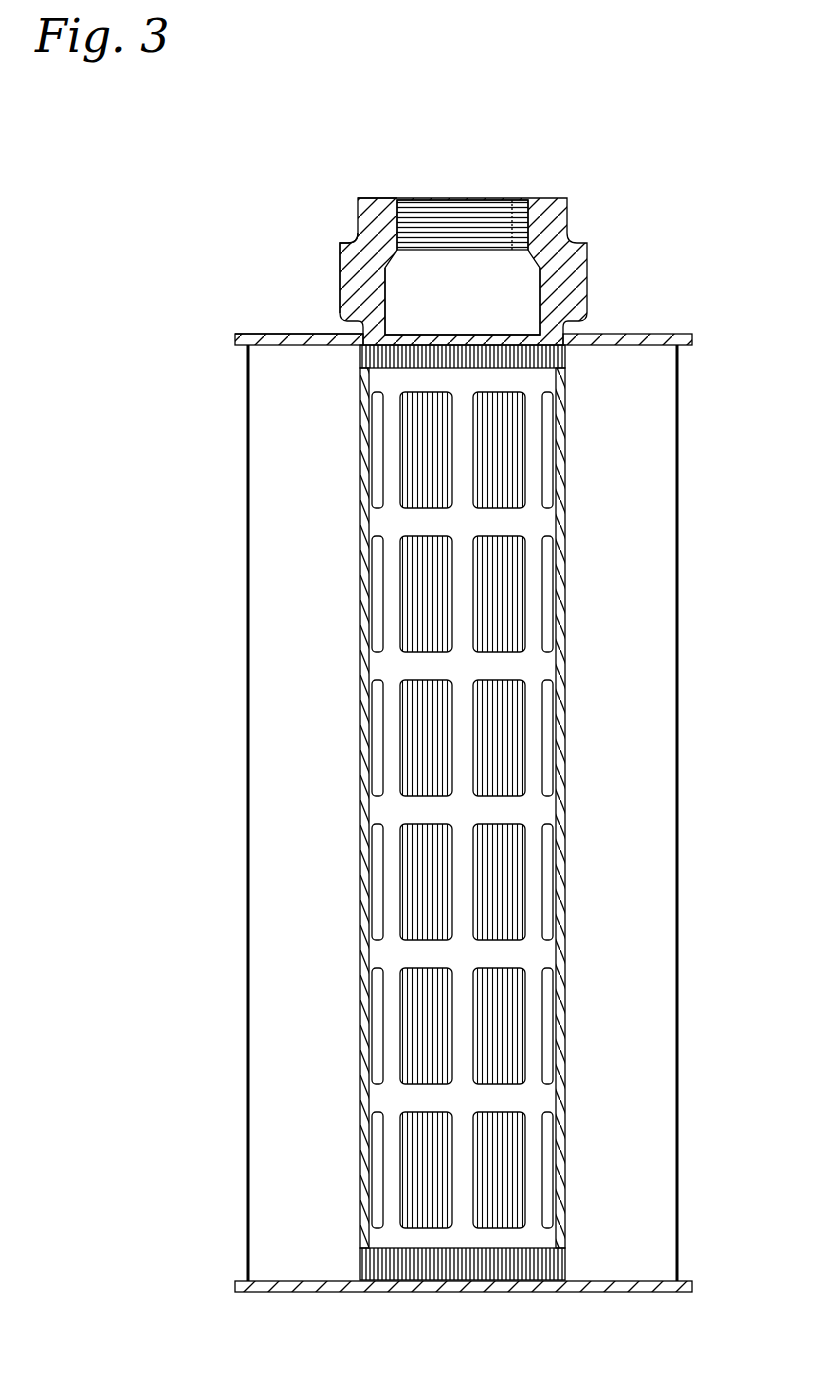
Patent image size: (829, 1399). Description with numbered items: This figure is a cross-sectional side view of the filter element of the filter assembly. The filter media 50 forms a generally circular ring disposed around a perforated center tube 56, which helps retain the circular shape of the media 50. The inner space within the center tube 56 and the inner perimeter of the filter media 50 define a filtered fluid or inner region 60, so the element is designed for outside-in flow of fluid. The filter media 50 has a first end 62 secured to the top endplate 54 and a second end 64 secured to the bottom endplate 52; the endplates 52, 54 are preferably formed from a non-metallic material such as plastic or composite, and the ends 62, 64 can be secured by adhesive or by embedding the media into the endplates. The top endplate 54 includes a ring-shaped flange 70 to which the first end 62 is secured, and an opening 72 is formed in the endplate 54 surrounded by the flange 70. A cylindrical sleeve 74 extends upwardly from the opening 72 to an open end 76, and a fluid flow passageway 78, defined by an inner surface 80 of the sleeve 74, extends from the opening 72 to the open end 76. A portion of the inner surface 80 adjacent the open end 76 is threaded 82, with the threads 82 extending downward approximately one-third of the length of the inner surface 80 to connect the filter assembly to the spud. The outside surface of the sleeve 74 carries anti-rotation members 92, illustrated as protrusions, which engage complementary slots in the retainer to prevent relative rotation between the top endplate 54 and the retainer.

The filter media 50 is at (653, 895).
The bottom endplate 52 is at (643, 1292).
The top endplate 54 is at (653, 332).
The perforated center tube 56 is at (565, 468).
The filtered fluid or inner region 60 is at (417, 1028).
The first end 62 is at (278, 423).
The second end 64 is at (278, 1255).
The ring-shaped flange 70 is at (288, 333).
The opening 72 is at (500, 338).
The cylindrical sleeve 74 is at (557, 218).
The open end 76 is at (373, 197).
The fluid flow passageway 78 is at (455, 283).
The inner surface 80 is at (426, 260).
The threads 82 is at (512, 200).
The anti-rotation members 92 is at (338, 258).